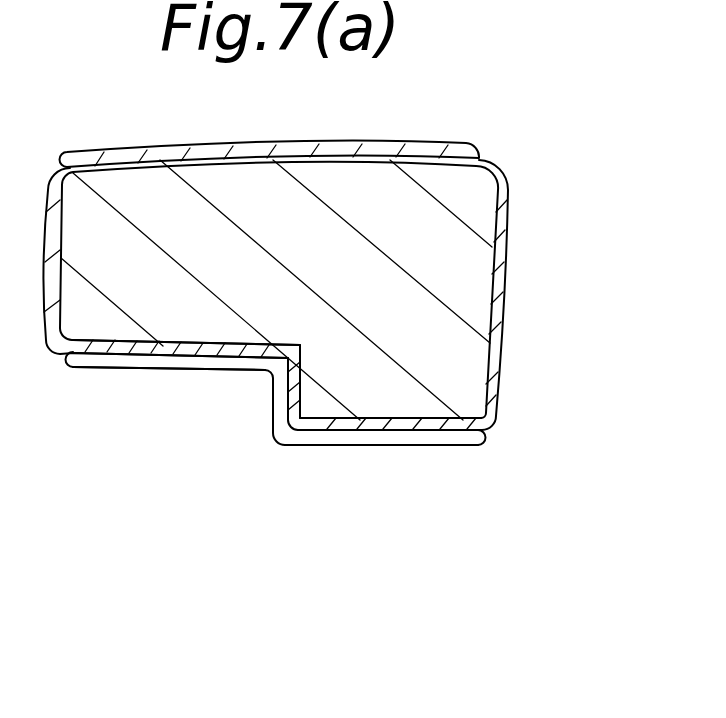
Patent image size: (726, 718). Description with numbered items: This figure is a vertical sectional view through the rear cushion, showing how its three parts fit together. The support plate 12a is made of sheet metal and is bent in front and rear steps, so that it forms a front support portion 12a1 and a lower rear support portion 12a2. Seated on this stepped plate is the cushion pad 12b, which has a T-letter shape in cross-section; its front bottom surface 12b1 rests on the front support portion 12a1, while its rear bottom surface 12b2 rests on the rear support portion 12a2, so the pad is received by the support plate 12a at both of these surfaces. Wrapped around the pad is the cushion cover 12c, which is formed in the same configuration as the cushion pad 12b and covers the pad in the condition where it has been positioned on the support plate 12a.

The support plate 12a is at (177, 360).
The front support portion 12a1 is at (101, 353).
The rear support portion 12a2 is at (420, 428).
The cushion pad 12b is at (482, 214).
The front bottom surface 12b1 is at (225, 357).
The rear bottom surface 12b2 is at (330, 420).
The cushion cover 12c is at (404, 146).